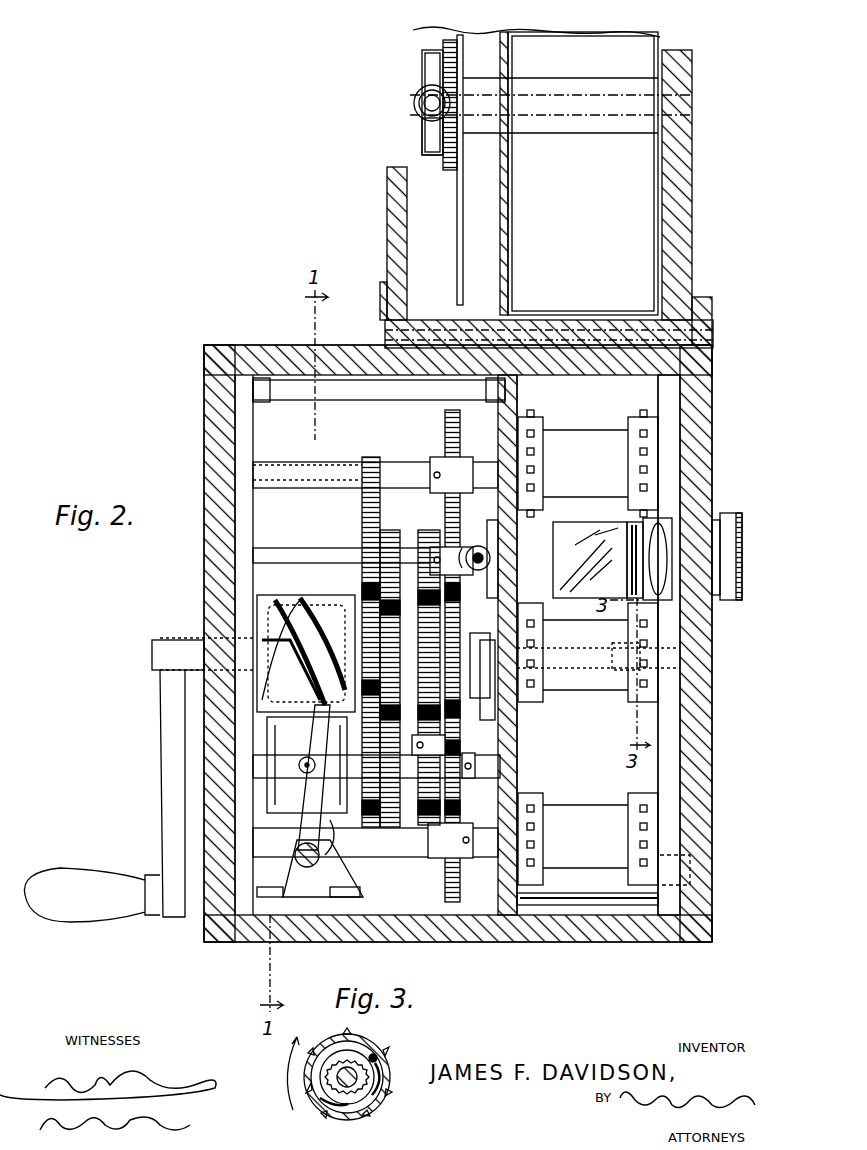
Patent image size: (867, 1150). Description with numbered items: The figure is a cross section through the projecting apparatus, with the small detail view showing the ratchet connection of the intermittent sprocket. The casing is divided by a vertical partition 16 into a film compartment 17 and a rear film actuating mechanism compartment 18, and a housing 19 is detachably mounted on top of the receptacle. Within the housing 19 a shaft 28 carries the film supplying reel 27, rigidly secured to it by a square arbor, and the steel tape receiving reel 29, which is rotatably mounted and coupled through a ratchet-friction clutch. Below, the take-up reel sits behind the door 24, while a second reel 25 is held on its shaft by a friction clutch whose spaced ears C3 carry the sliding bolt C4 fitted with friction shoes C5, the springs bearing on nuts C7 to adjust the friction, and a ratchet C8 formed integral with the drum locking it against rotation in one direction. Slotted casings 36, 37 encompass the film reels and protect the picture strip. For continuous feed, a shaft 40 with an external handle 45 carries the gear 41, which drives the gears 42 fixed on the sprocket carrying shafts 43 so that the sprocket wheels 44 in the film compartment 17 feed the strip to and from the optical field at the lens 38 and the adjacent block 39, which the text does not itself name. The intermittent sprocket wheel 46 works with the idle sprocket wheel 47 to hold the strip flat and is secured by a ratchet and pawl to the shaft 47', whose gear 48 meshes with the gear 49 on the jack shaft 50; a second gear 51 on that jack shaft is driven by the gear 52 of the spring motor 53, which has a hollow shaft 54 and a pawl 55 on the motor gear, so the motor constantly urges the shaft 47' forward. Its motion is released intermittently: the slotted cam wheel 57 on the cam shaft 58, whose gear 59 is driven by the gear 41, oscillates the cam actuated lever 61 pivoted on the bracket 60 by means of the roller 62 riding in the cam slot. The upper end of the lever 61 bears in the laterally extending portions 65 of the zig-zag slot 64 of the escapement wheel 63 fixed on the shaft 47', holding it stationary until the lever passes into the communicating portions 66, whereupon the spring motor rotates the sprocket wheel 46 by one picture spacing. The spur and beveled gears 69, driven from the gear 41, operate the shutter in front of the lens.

In FIG. 2, the spaced ears C3 is at (422, 128).
In FIG. 2, the sliding bolt C4 is at (420, 103).
In FIG. 2, the friction shoes C5 is at (430, 62).
In FIG. 2, the nuts C7 is at (426, 92).
In FIG. 2, the ratchet C8 is at (450, 46).
In FIG. 2, the vertical partition 16 is at (516, 393).
In FIG. 2, the film compartment 17 is at (536, 171).
In FIG. 2, the rear film actuating mechanism compartment 18 is at (298, 412).
In FIG. 2, the housing 19 is at (694, 157).
In FIG. 2, the door 24 is at (698, 860).
In FIG. 2, the second reel 25 is at (510, 726).
In FIG. 2, the film supplying reel 27 is at (624, 126).
In FIG. 2, the shaft 28 is at (578, 96).
In FIG. 2, the steel tape receiving reel 29 is at (483, 128).
In FIG. 2, the casing 36 is at (574, 316).
In FIG. 2, the casing 37 is at (576, 905).
In FIG. 2, the lens 38 is at (733, 520).
In FIG. 2, the lens block 39 is at (590, 560).
In FIG. 2, the shaft 40 is at (153, 640).
In FIG. 2, the gear 41 is at (498, 597).
In FIG. 2, the gears 42 is at (445, 436).
In FIG. 2, the sprocket carrying shafts 43 is at (345, 466).
In FIG. 2, the sprocket wheels 44 is at (560, 500).
In FIG. 2, the handle 45 is at (83, 874).
In FIG. 2, the sprocket wheel 46 is at (568, 684).
In FIG. 3, the sprocket wheel 46 is at (376, 1060).
In FIG. 2, the idle sprocket wheel 47 is at (588, 448).
In FIG. 2, the shaft 47' is at (478, 680).
In FIG. 3, the shaft 47' is at (371, 1076).
In FIG. 2, the gear 48 is at (410, 712).
In FIG. 2, the gear 49 is at (440, 751).
In FIG. 2, the jack shaft 50 is at (356, 672).
In FIG. 2, the second gear 51 is at (355, 625).
In FIG. 2, the gear 52 is at (362, 512).
In FIG. 2, the spring motor 53 is at (286, 466).
In FIG. 2, the hollow shaft 54 is at (388, 568).
In FIG. 2, the pawl 55 is at (396, 665).
In FIG. 2, the slotted cam wheel 57 is at (307, 765).
In FIG. 2, the cam shaft 58 is at (408, 780).
In FIG. 2, the gear 59 is at (445, 780).
In FIG. 2, the bracket 60 is at (310, 872).
In FIG. 2, the cam actuated lever 61 is at (328, 858).
In FIG. 2, the roller 62 is at (300, 762).
In FIG. 2, the escapement wheel 63 is at (274, 612).
In FIG. 2, the zig-zag slot 64 is at (322, 644).
In FIG. 2, the laterally extending portions 65 is at (291, 670).
In FIG. 2, the communicating portions 66 is at (255, 632).
In FIG. 2, the spur and beveled gears 69 is at (474, 546).